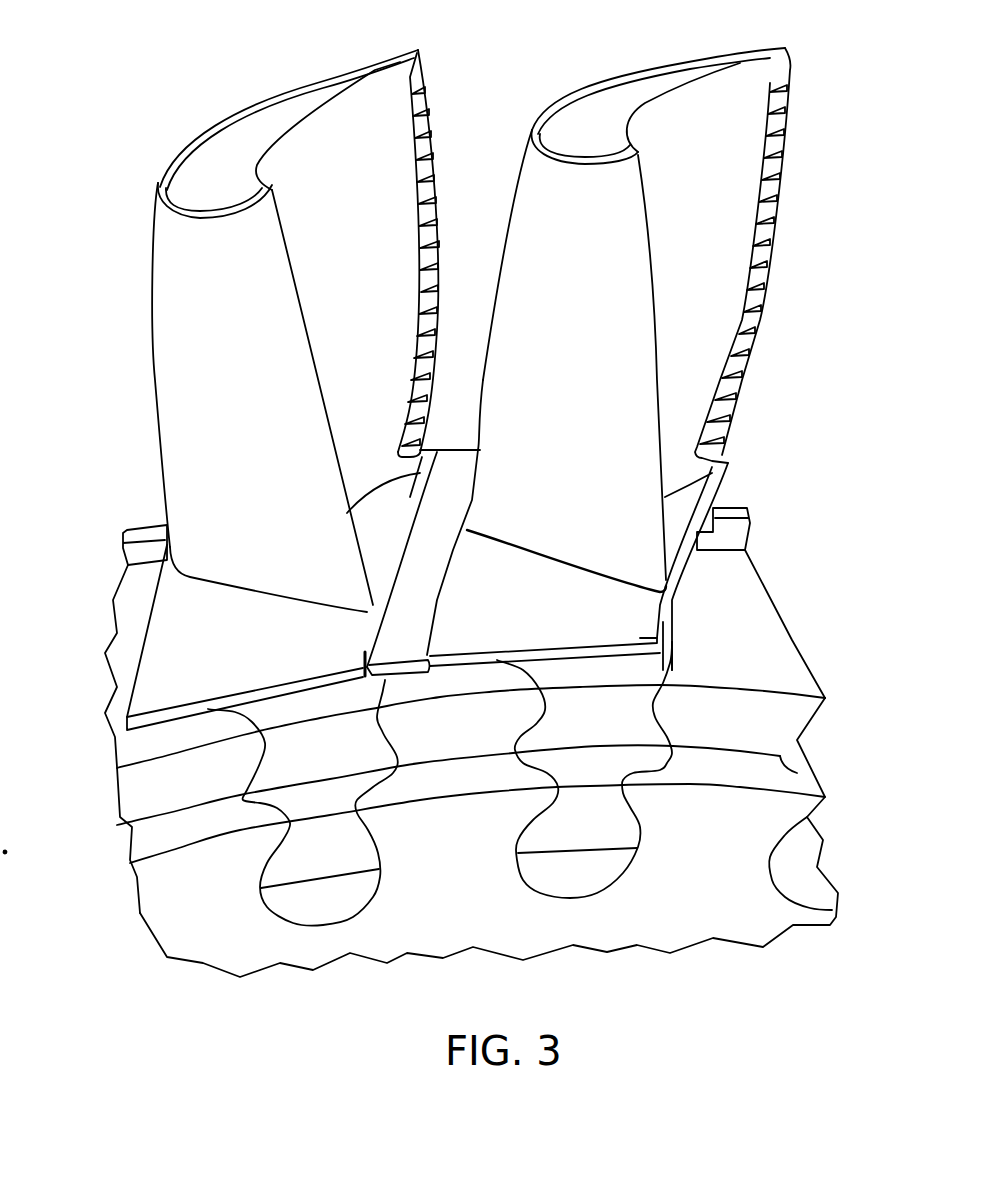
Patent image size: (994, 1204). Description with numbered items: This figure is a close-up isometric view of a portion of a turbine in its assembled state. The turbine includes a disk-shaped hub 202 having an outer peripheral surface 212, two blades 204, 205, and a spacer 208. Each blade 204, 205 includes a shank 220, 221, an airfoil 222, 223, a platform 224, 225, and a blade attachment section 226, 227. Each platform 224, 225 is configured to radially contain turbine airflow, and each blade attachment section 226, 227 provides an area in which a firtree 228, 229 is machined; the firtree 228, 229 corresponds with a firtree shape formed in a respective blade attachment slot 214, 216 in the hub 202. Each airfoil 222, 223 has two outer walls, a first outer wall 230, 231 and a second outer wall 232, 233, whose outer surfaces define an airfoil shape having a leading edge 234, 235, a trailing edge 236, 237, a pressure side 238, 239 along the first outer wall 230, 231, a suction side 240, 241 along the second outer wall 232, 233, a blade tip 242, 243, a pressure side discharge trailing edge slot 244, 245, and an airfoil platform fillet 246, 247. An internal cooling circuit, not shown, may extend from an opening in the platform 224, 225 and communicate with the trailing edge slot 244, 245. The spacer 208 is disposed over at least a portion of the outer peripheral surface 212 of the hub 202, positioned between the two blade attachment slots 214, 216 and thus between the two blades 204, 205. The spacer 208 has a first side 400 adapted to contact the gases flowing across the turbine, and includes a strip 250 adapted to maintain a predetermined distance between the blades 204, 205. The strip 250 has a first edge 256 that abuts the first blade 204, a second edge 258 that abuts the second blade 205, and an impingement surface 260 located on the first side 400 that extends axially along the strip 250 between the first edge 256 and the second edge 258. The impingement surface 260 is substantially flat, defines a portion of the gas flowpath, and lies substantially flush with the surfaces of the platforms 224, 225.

The hub 202 is at (468, 922).
The blade 204 is at (722, 100).
The blade 205 is at (347, 117).
The spacer 208 is at (383, 637).
The outer peripheral surface 212 is at (463, 680).
The blade attachment slot 214 is at (553, 868).
The blade attachment slot 216 is at (347, 903).
The shank 220 is at (640, 657).
The shank 221 is at (257, 710).
The airfoil 222 is at (707, 283).
The airfoil 223 is at (183, 318).
The platform 224 is at (648, 607).
The platform 225 is at (167, 653).
The blade attachment section 226 is at (557, 722).
The blade attachment section 227 is at (313, 817).
The firtree 228 is at (660, 773).
The firtree 229 is at (263, 812).
The first outer wall 230 is at (713, 222).
The first outer wall 231 is at (377, 258).
The second outer wall 232 is at (597, 87).
The second outer wall 233 is at (207, 133).
The leading edge 234 is at (643, 393).
The leading edge 235 is at (250, 368).
The trailing edge 236 is at (780, 193).
The trailing edge 237 is at (435, 160).
The pressure side 238 is at (703, 335).
The pressure side 239 is at (377, 200).
The suction side 240 is at (503, 405).
The suction side 241 is at (160, 262).
The blade tip 242 is at (687, 67).
The blade tip 243 is at (273, 100).
The pressure side discharge trailing edge slot 244 is at (767, 153).
The pressure side discharge trailing edge slot 245 is at (423, 297).
The airfoil platform fillet 246 is at (576, 578).
The airfoil platform fillet 247 is at (227, 587).
The strip 250 is at (435, 510).
The first edge 256 is at (443, 582).
The second edge 258 is at (393, 545).
The impingement surface 260 is at (380, 607).
The first side 400 is at (433, 527).